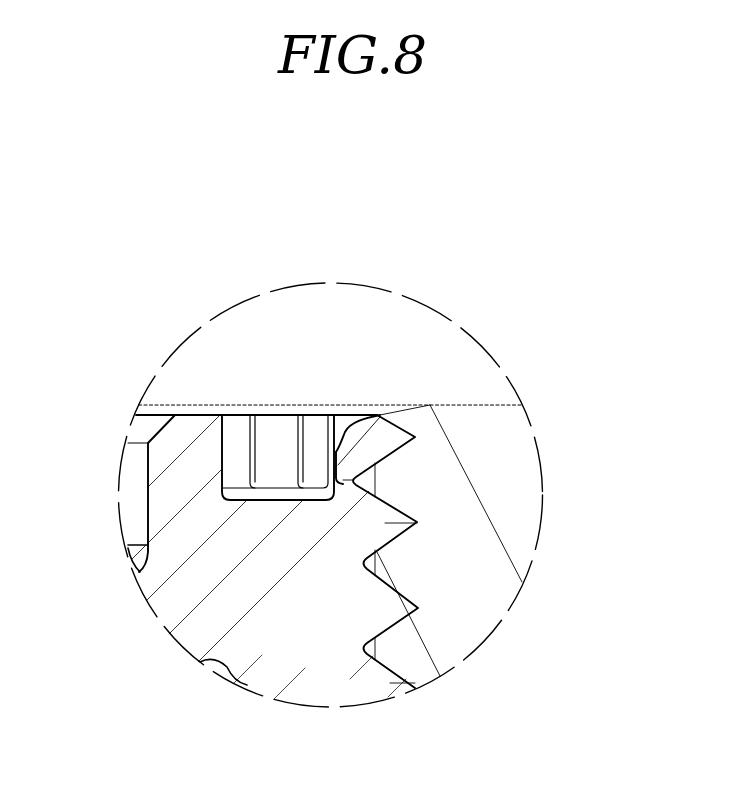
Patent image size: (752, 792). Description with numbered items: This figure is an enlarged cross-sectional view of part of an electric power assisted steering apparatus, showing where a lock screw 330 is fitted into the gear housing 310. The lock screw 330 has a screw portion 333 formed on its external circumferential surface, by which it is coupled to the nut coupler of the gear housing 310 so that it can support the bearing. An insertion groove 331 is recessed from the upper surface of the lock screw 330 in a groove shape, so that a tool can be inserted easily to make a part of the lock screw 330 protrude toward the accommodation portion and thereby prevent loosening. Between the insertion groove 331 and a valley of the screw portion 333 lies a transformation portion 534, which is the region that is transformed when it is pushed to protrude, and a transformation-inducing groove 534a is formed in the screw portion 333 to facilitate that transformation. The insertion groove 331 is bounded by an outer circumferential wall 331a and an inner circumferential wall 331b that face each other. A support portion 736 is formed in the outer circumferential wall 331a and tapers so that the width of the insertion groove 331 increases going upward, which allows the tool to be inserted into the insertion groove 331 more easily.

The gear housing 310 is at (476, 573).
The lock screw 330 is at (182, 490).
The insertion groove 331 is at (281, 488).
The outer circumferential wall 331a is at (337, 465).
The inner circumferential wall 331b is at (224, 443).
The screw portion 333 is at (417, 522).
The transformation portion 534 is at (517, 406).
The transformation-inducing groove 534a is at (352, 480).
The support portion 736 is at (346, 432).